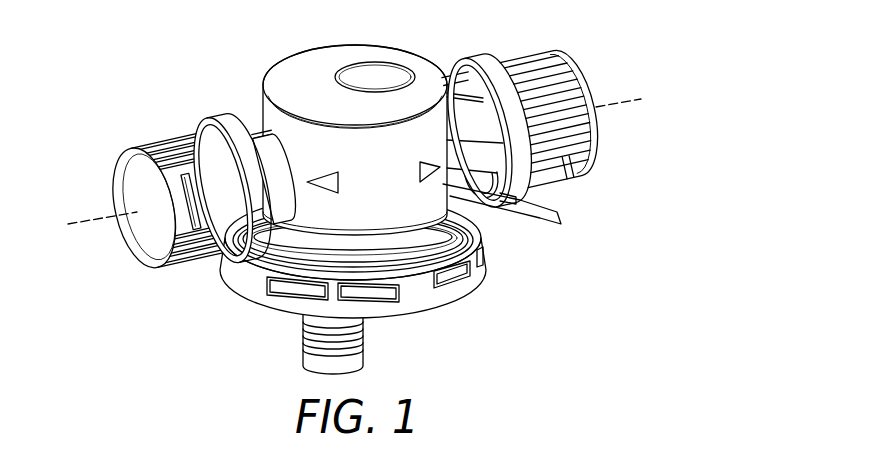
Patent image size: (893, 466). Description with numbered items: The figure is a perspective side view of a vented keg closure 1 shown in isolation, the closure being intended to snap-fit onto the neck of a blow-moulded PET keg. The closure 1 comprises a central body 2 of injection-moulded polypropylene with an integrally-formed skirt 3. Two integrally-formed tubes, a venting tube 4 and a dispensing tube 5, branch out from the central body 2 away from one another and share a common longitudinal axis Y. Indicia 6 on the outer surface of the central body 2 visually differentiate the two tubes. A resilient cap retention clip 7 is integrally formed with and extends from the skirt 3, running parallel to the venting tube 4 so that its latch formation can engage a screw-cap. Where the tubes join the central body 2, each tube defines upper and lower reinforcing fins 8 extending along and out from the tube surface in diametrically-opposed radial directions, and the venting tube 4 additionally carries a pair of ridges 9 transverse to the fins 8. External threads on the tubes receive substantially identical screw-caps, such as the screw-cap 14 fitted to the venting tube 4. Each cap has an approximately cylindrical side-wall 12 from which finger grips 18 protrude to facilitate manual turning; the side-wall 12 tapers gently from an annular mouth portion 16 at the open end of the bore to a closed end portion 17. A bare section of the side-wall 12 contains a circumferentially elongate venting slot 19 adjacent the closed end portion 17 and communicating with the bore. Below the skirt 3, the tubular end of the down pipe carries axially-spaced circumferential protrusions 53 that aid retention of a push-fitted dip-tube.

The vented keg closure 1 is at (93, 103).
The central body 2 is at (297, 63).
The skirt 3 is at (353, 285).
The venting tube 4 is at (475, 111).
The dispensing tube 5 is at (283, 202).
The indicia 6 is at (402, 135).
The resilient cap retention clip 7 is at (548, 207).
The reinforcing fins 8 is at (262, 140).
The ridges 9 is at (438, 182).
The side-wall 12 is at (172, 216).
The screw-cap 14 is at (570, 66).
The annular mouth portion 16 is at (227, 121).
The closed end portion 17 is at (122, 177).
The finger grips 18 is at (175, 143).
The venting slot 19 is at (188, 268).
The circumferential protrusions 53 is at (365, 352).